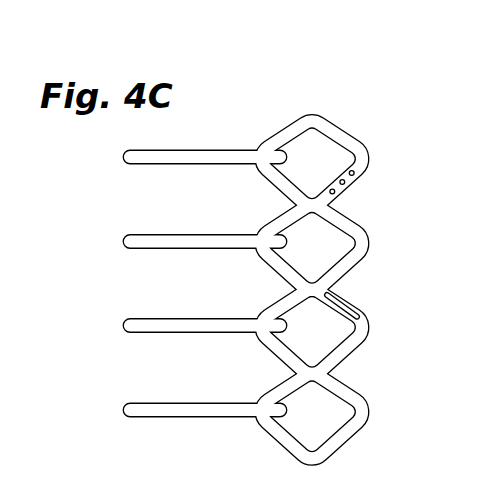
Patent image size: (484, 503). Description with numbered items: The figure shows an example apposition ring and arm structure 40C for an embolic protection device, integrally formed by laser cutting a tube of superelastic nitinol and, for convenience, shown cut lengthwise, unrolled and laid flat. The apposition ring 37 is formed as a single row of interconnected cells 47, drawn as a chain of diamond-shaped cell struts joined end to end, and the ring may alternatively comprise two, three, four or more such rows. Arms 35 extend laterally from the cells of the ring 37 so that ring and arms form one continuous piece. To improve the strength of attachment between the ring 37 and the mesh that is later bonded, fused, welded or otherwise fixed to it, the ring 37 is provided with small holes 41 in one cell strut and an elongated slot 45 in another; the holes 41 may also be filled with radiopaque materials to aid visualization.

The apposition ring and arm structure 40C is at (245, 70).
The apposition ring 37 is at (279, 137).
The arms 35 is at (204, 165).
The holes 41 is at (335, 191).
The slots 45 is at (352, 297).
The interconnected cells 47 is at (301, 427).